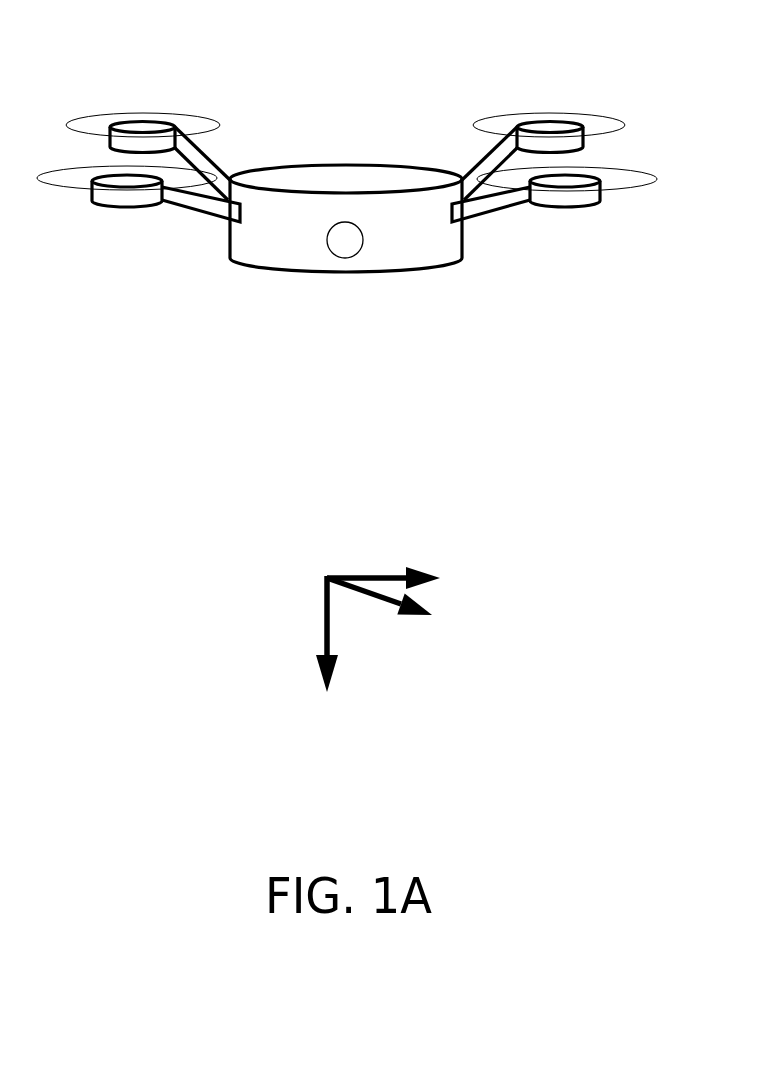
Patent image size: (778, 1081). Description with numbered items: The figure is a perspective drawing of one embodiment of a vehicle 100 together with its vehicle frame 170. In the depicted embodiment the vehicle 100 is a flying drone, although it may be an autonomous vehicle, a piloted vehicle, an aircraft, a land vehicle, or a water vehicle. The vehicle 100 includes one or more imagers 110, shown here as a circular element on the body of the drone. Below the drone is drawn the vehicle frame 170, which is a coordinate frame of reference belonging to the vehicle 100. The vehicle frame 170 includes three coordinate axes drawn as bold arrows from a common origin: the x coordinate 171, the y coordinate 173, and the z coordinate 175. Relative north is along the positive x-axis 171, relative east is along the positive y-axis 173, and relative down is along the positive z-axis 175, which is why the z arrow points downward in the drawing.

The vehicle 100 is at (347, 177).
The imager 110 is at (360, 252).
The vehicle frame 170 is at (342, 551).
The x_V coordinate 171 is at (386, 575).
The y_V coordinate 173 is at (366, 595).
The z_V coordinate 175 is at (286, 612).